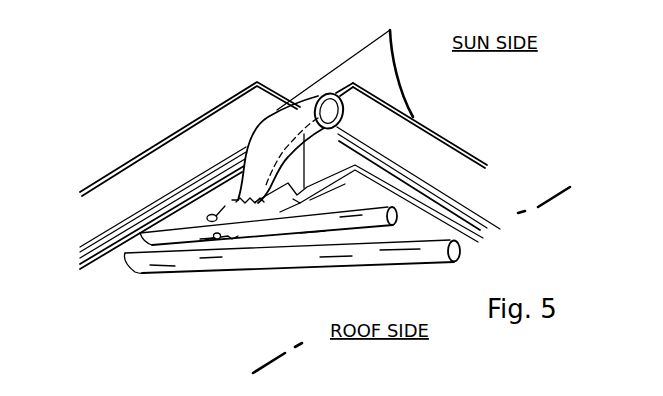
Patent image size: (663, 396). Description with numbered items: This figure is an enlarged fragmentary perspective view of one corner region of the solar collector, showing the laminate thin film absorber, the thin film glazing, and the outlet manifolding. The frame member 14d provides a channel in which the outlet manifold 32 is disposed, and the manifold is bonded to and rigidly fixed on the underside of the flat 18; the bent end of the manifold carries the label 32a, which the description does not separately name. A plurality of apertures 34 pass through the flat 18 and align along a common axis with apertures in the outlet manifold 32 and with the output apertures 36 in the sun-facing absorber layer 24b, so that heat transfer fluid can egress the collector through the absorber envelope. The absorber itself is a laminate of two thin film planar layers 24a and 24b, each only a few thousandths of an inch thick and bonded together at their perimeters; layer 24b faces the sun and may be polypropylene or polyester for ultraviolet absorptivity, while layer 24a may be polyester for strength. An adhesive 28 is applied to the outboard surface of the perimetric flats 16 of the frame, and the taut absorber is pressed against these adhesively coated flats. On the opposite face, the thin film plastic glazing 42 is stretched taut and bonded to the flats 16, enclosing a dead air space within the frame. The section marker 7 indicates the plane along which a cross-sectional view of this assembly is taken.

The perimetric flats 16 is at (147, 160).
The flat 18 is at (405, 180).
The frame member 14d is at (100, 240).
The adhesive 28 is at (180, 222).
The outlet manifold 32 is at (308, 104).
The tube elbow 32a is at (250, 158).
The apertures 34 is at (212, 214).
The output apertures 36 is at (198, 232).
The thin film planar layer 24a is at (340, 258).
The thin film planar layer 24b is at (256, 238).
The thin film plastic glazing 42 is at (364, 60).
The section line 7- 7 is at (556, 188).